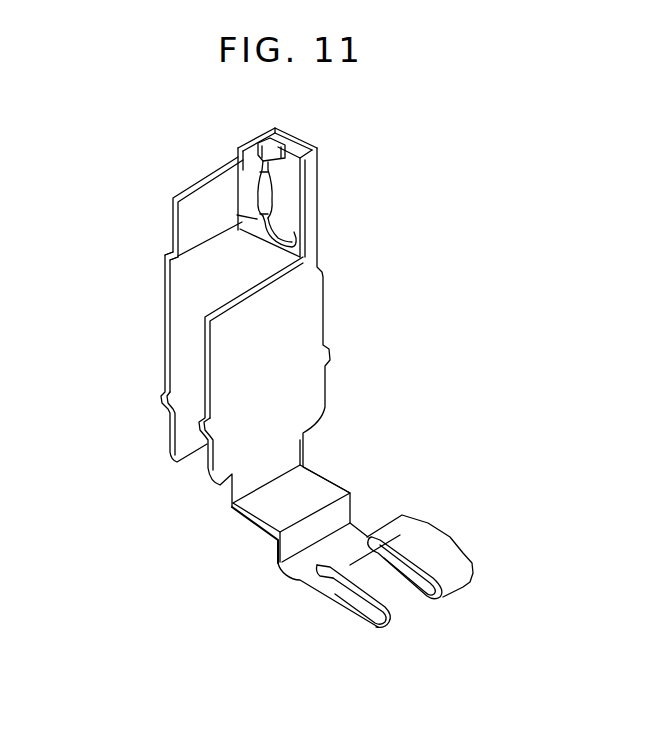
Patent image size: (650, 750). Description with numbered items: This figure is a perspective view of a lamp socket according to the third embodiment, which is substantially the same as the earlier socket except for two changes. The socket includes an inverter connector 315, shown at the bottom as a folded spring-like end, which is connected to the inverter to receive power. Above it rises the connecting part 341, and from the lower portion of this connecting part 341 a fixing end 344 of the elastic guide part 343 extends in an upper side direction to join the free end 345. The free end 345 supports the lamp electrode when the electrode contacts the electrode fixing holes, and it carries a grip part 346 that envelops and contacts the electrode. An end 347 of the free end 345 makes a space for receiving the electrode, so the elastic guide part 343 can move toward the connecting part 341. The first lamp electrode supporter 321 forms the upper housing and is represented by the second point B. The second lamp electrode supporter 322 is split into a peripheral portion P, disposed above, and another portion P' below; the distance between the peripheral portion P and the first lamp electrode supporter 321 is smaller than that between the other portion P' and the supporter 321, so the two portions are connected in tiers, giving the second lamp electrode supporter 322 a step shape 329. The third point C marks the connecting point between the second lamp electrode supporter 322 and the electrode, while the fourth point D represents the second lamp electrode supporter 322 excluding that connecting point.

The inverter connector 315 is at (470, 564).
The first lamp electrode supporter 321 is at (312, 315).
The second lamp electrode supporter 322 is at (170, 207).
The step shape 329 is at (163, 259).
The connecting part 341 is at (300, 165).
The elastic guide part 343 is at (312, 174).
The fixing end 344 is at (292, 248).
The free end 345 is at (275, 185).
The grip part 346 is at (240, 160).
The end of the free end 347 is at (284, 131).
The peripheral portion P is at (163, 153).
The other portion P' is at (201, 382).
The second point B is at (312, 195).
The third point C is at (176, 227).
The fourth point D is at (167, 442).